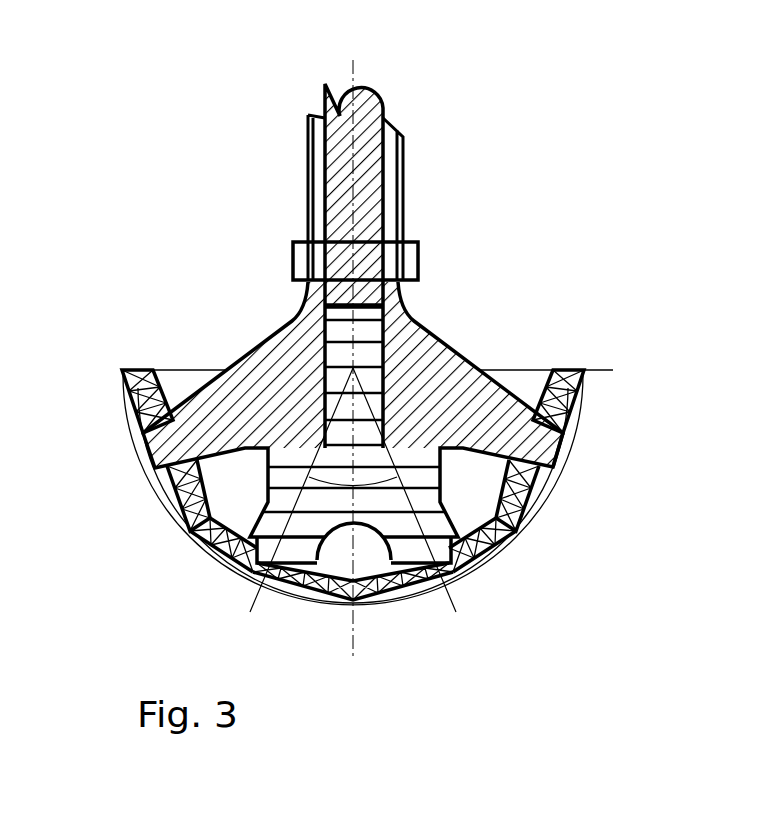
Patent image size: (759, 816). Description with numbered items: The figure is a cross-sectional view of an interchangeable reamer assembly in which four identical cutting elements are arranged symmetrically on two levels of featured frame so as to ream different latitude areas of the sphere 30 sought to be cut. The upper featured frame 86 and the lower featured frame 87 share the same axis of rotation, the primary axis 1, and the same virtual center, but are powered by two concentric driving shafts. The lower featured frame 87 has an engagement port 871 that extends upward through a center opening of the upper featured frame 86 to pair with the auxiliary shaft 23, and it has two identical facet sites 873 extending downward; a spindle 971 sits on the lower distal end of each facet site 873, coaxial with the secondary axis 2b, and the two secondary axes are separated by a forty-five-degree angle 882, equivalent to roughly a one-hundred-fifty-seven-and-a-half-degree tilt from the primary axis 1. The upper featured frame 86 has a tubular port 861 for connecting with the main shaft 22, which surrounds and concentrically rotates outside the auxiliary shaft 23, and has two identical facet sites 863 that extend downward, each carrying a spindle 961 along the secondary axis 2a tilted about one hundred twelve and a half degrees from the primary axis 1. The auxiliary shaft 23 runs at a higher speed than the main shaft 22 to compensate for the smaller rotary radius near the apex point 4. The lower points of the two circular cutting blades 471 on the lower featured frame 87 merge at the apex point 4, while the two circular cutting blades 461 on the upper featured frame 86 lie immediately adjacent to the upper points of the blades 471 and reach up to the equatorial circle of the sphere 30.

The primary axis 1 is at (355, 77).
The auxiliary shaft 23 is at (385, 121).
The main shaft 22 is at (397, 182).
The tubular port 861 is at (418, 255).
The upper featured frame 86 is at (422, 313).
The lower featured frame 87 is at (328, 388).
The engagement port 871 is at (345, 332).
The 45-degree angle 882 is at (160, 405).
The facet site 873 is at (178, 485).
The spindle 971 is at (215, 545).
The circular cutting blade 471 is at (300, 573).
The apex point 4 is at (355, 601).
The facet site 863 is at (685, 370).
The spindle 961 is at (563, 435).
The circular cutting blade 461 is at (543, 418).
The sphere 30 is at (417, 491).
The secondary axis 2a is at (578, 428).
The secondary axis 2b is at (453, 608).